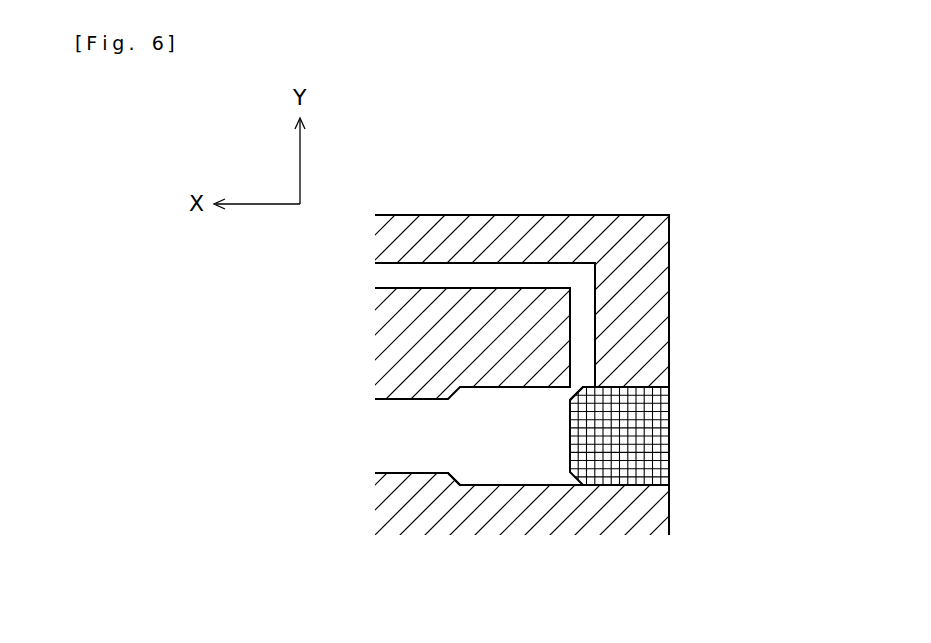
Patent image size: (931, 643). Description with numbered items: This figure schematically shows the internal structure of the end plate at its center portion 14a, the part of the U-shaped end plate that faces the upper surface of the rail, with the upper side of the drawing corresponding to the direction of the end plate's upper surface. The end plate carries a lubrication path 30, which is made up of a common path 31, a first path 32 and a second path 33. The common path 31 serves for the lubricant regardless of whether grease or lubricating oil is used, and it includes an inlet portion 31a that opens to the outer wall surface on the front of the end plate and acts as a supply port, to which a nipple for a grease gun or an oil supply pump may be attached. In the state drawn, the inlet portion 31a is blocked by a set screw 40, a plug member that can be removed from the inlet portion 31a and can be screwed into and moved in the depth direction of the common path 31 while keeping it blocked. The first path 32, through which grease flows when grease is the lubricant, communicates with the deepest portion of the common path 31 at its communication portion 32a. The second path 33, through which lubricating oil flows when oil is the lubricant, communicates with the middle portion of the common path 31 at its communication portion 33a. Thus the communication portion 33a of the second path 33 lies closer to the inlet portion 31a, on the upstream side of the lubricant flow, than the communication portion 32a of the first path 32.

The center portion 14a is at (653, 252).
The lubrication path 30 is at (238, 237).
The common path 31 is at (495, 405).
The first path 32 is at (410, 413).
The second path 33 is at (413, 272).
The inlet portion 31a is at (668, 443).
The communication portion 32a is at (448, 435).
The communication portion 33a is at (577, 387).
The set screw 40 is at (622, 467).